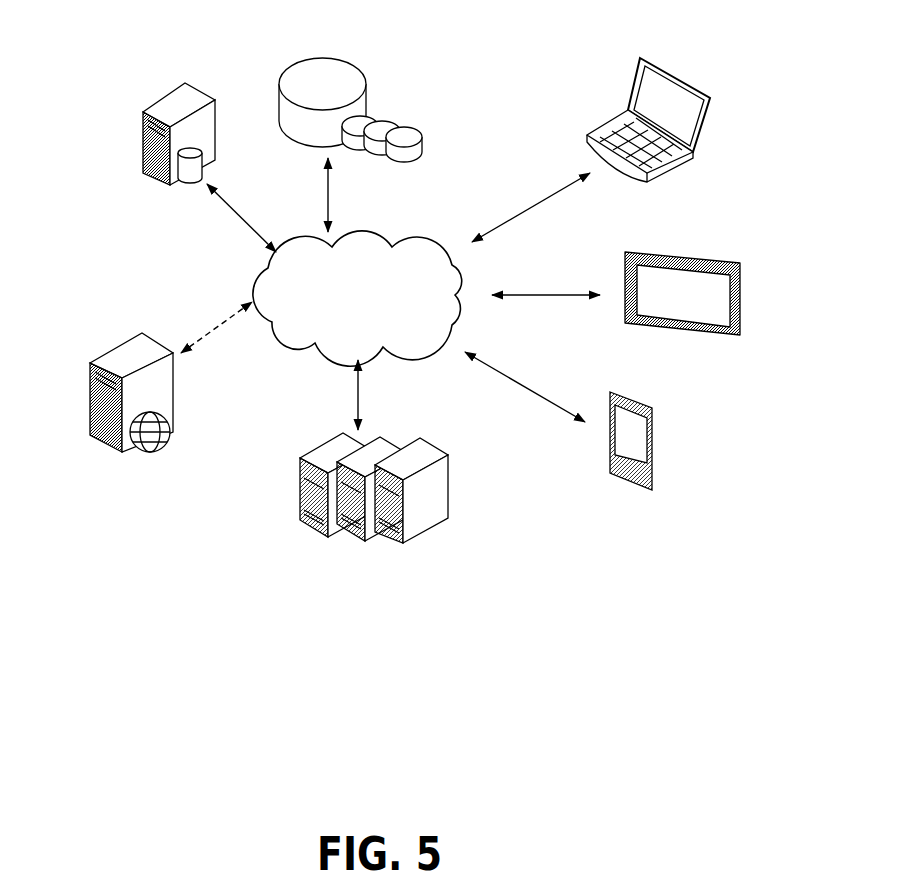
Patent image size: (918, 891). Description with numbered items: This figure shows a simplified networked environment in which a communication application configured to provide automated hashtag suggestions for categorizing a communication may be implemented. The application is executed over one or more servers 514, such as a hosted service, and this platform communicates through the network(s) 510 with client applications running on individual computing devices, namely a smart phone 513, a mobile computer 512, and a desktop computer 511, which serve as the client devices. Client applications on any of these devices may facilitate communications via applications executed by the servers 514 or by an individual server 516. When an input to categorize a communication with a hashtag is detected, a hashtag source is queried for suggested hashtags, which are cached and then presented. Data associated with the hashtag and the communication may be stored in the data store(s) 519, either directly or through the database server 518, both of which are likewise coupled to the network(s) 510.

The network(s) 510 is at (366, 221).
The desktop computer 511 is at (681, 59).
The mobile computer 512 is at (716, 236).
The smart phone 513 is at (659, 409).
The servers 514 is at (325, 436).
The individual server 516 is at (110, 344).
The database server 518 is at (178, 193).
The data store(s) 519 is at (337, 41).